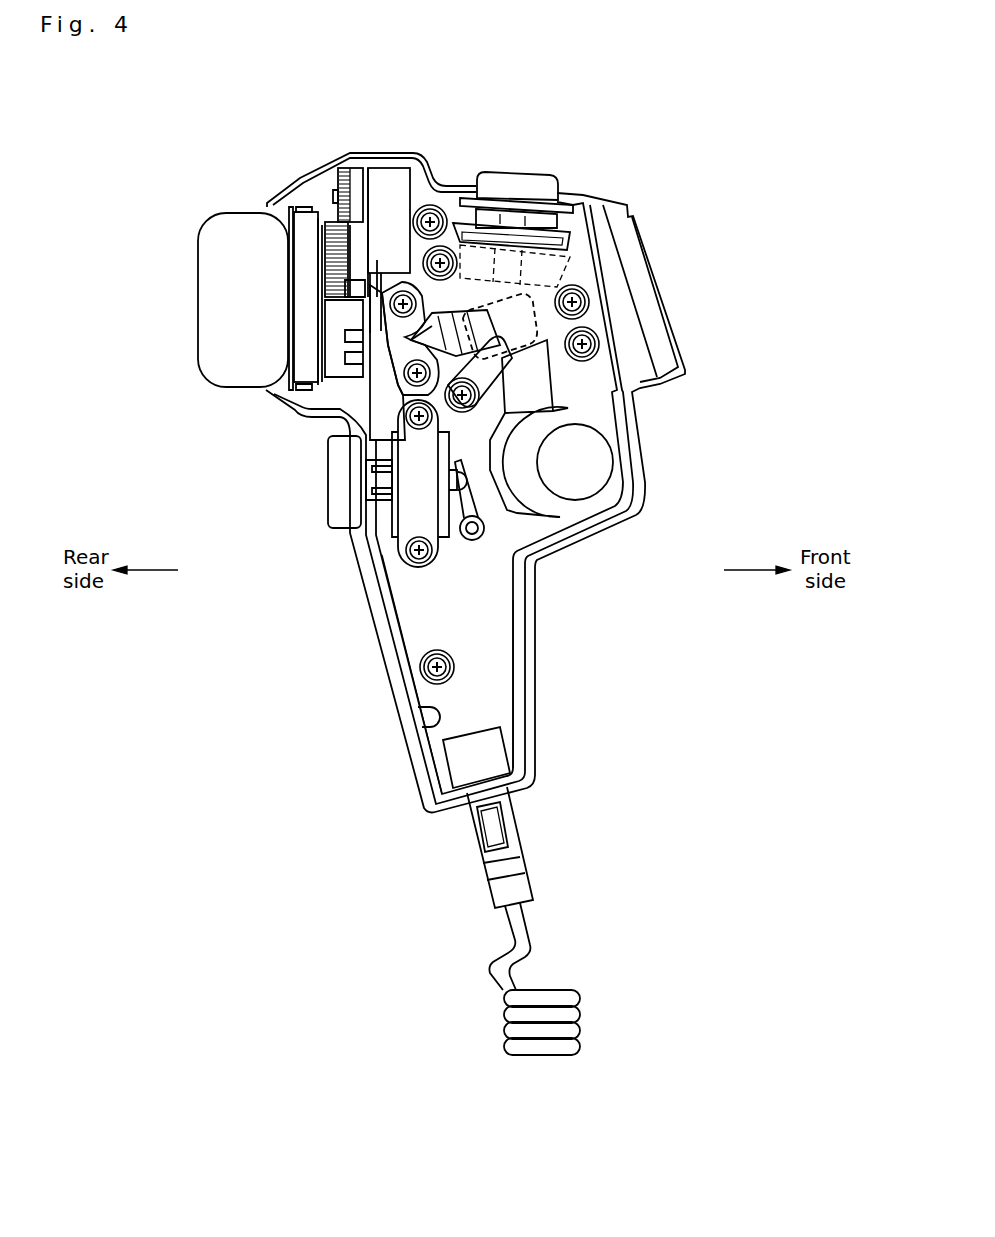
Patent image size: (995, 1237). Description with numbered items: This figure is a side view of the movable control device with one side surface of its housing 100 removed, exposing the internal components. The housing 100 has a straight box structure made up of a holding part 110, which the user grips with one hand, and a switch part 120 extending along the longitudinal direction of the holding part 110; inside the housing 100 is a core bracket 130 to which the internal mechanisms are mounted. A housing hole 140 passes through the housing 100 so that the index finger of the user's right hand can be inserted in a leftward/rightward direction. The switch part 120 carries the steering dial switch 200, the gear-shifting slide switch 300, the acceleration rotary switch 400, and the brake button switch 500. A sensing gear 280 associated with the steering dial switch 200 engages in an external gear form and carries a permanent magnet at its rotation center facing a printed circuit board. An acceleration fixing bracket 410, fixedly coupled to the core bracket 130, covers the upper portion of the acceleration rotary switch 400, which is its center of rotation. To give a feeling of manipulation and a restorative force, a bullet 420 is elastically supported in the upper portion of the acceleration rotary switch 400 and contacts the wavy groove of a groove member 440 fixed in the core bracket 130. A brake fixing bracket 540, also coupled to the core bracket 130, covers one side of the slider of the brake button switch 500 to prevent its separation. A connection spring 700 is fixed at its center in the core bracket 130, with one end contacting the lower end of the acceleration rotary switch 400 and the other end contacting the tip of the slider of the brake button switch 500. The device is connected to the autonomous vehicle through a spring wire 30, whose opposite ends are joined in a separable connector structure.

The spring wire 30 is at (570, 1030).
The housing 100 is at (614, 197).
The holding part 110 is at (405, 717).
The switch part 120 is at (665, 290).
The core bracket 130 is at (425, 617).
The housing hole 140 is at (582, 425).
The steering dial switch 200 is at (210, 248).
The sensing gear 280 is at (347, 185).
The gear-shifting slide switch 300 is at (515, 180).
The acceleration rotary switch 400 is at (530, 487).
The acceleration fixing bracket 410 is at (545, 315).
The bullet 420 is at (420, 337).
The groove member 440 is at (403, 353).
The brake button switch 500 is at (330, 490).
The brake fixing bracket 540 is at (405, 513).
The connection spring 700 is at (490, 520).